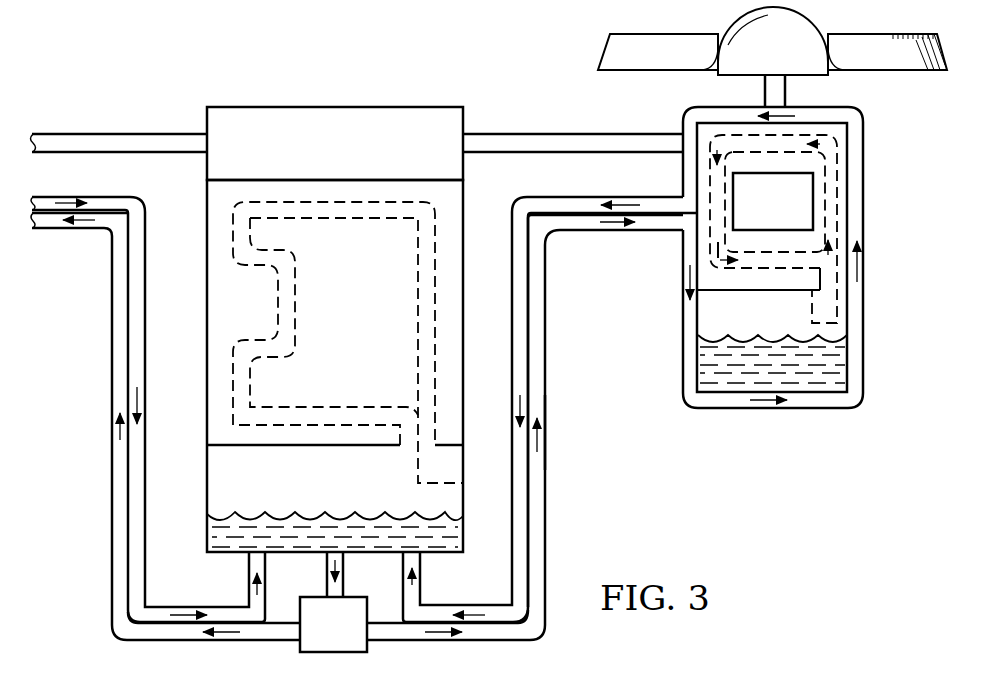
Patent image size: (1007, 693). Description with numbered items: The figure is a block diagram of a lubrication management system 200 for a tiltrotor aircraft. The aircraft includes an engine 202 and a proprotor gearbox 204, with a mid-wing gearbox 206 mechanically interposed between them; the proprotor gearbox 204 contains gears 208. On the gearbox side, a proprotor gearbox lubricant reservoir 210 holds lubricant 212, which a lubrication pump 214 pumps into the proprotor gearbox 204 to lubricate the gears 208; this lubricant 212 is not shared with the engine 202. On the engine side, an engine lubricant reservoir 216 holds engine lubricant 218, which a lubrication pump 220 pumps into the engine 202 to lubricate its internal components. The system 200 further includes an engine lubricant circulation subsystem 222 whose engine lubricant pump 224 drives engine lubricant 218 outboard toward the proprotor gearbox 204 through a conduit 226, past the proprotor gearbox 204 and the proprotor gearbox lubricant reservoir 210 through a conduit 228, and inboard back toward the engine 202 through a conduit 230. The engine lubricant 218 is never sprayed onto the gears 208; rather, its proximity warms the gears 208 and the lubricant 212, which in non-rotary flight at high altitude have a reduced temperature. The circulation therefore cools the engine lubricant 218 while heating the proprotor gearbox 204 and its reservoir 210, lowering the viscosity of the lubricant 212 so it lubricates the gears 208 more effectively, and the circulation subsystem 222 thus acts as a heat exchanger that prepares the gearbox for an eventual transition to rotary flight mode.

The lubrication management system 200 is at (114, 99).
The engine 202 is at (215, 193).
The proprotor gearbox 204 is at (842, 133).
The mid-wing gearbox 206 is at (332, 107).
The gears 208 is at (813, 203).
The proprotor gearbox lubricant reservoir 210 is at (705, 325).
The lubricant 212 is at (840, 368).
The lubrication pump 214 is at (840, 308).
The engine lubricant reservoir 216 is at (213, 497).
The engine lubricant 218 is at (205, 530).
The lubrication pump 220 is at (453, 465).
The engine lubricant circulation subsystem 222 is at (551, 428).
The engine lubricant pump 224 is at (355, 642).
The conduit 226 is at (547, 335).
The conduit 228 is at (770, 408).
The conduit 230 is at (511, 245).